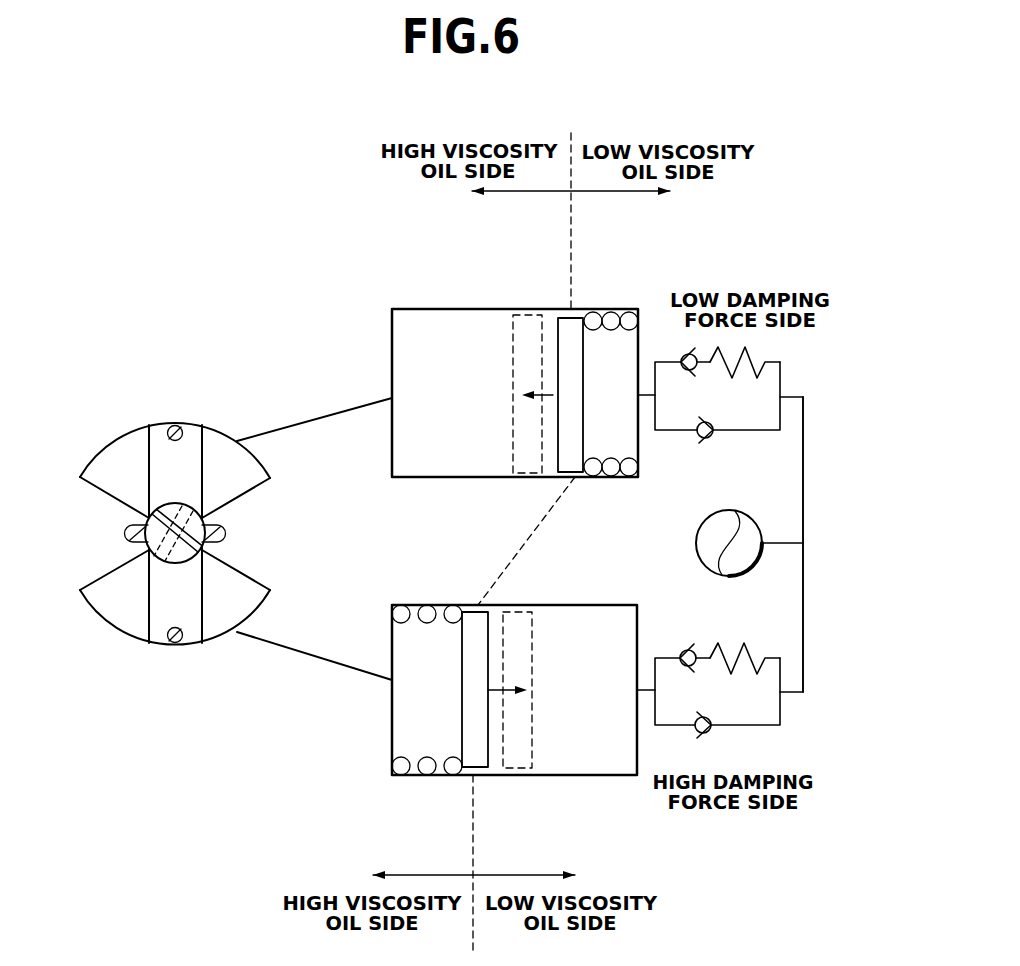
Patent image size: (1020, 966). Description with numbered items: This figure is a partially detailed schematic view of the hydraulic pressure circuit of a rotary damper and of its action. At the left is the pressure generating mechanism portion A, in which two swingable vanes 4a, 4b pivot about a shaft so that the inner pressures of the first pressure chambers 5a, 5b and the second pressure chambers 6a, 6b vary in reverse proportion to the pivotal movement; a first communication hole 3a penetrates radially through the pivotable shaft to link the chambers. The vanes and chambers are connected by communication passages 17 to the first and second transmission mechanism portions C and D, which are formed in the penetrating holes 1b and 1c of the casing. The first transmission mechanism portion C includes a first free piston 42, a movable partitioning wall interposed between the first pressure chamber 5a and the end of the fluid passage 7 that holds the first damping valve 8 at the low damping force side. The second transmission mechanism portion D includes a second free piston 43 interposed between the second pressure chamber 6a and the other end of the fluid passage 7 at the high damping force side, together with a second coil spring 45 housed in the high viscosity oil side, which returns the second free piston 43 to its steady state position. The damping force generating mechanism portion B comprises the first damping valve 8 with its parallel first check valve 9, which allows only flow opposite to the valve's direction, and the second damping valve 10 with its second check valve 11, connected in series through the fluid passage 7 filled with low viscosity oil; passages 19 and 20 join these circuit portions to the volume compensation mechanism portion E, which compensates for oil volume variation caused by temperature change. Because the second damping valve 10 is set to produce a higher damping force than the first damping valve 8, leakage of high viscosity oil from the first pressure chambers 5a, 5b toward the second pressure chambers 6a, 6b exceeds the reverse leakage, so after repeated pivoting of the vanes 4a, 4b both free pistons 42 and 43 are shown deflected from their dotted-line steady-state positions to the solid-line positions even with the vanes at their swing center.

The penetrating hole 1b is at (452, 322).
The penetrating hole 1c is at (563, 777).
The first communication hole 3a is at (147, 560).
The swingable vane 4a is at (173, 467).
The swingable vane 4b is at (177, 583).
The first pressure chamber 5a is at (230, 443).
The first pressure chamber 5b is at (103, 597).
The second pressure chamber 6a is at (222, 625).
The second pressure chamber 6b is at (128, 447).
The fluid passage 7 is at (808, 500).
The first damping valve 8 is at (753, 360).
The first check valve 9 is at (698, 440).
The second damping valve 10 is at (750, 653).
The second check valve 11 is at (705, 737).
The communication passage 17 is at (322, 415).
The passage 19 is at (803, 455).
The passage 20 is at (803, 667).
The first free piston 42 is at (568, 320).
The second free piston 43 is at (490, 610).
The second coil spring 45 is at (413, 776).
The pressure generating mechanism portion A is at (193, 410).
The damping force generating mechanism portion B is at (669, 343).
The first transmission mechanism portion C is at (594, 296).
The second transmission mechanism portion D is at (425, 585).
The volume compensation mechanism portion E is at (775, 536).